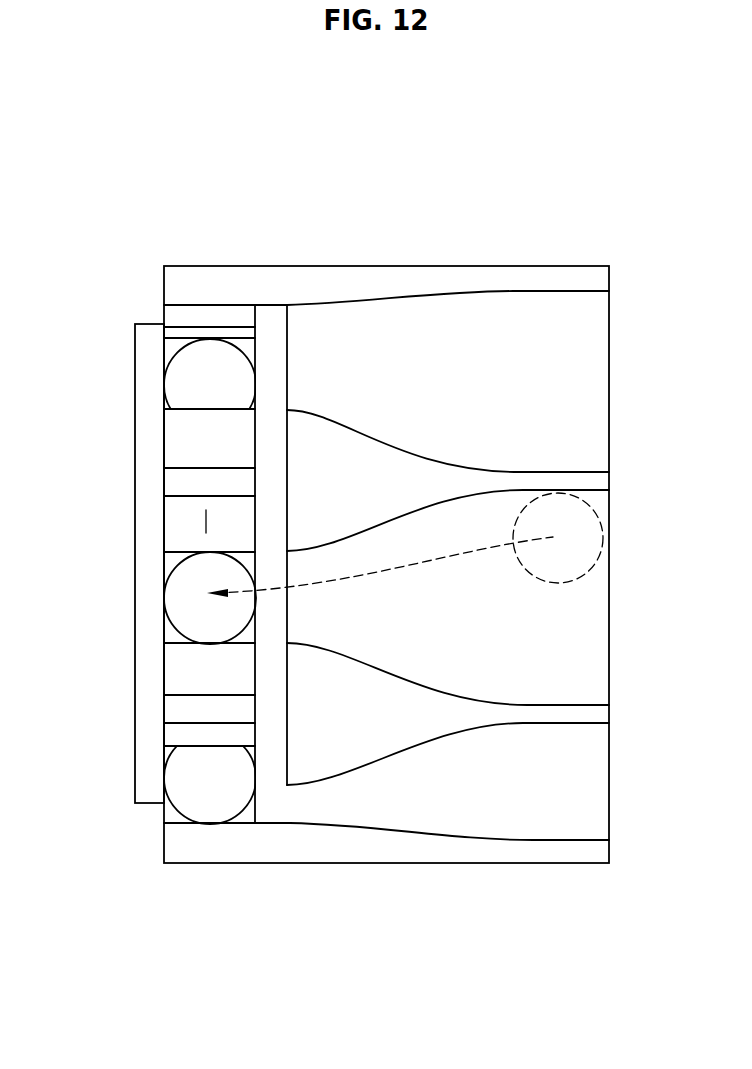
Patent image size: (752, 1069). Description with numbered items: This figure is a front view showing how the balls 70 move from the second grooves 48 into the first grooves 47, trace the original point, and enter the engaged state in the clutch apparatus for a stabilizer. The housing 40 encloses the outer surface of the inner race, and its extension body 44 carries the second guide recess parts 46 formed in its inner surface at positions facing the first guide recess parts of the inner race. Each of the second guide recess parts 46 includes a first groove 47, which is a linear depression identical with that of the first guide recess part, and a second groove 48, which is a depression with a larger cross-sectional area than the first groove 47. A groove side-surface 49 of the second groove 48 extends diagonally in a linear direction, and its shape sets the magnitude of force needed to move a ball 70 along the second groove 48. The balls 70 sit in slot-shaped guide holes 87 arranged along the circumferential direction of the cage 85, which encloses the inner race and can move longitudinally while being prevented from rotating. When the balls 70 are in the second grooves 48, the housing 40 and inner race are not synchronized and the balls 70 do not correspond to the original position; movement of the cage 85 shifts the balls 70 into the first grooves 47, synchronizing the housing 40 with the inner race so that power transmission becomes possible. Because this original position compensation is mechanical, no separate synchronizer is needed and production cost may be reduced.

The housing 40 is at (337, 248).
The extension body 44 is at (417, 276).
The second guide recess parts 46 is at (315, 950).
The first groove 47 is at (180, 648).
The second groove 48 is at (452, 652).
The groove side-surface 49 is at (530, 650).
The balls 70 is at (207, 366).
The cage 85 is at (150, 575).
The guide holes 87 is at (206, 518).